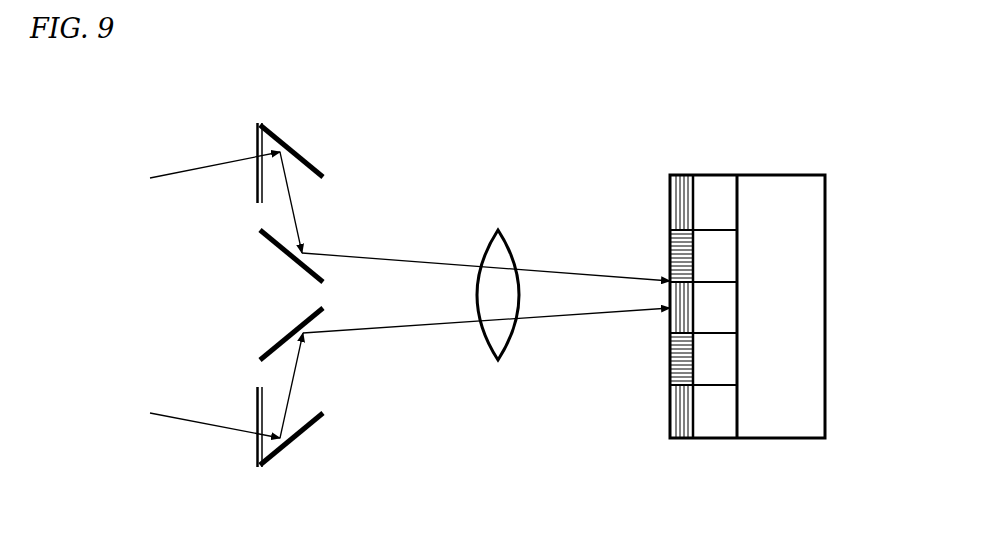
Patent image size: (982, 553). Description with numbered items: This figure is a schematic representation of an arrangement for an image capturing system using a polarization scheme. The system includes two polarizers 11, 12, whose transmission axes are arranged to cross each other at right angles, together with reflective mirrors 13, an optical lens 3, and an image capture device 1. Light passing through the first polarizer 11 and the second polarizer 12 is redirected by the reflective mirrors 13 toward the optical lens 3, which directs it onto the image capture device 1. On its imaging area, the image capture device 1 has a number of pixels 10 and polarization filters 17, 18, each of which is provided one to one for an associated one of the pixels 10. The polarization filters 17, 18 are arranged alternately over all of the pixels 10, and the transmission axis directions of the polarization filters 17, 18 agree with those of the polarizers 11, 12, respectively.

The image capture device 1 is at (780, 202).
The optical lens 3 is at (498, 255).
The pixels 10 is at (715, 203).
The polarizer 11 is at (258, 150).
The polarizer 12 is at (258, 438).
The reflective mirrors 13 is at (300, 150).
The polarization filter 17 is at (670, 200).
The polarization filter 18 is at (670, 253).